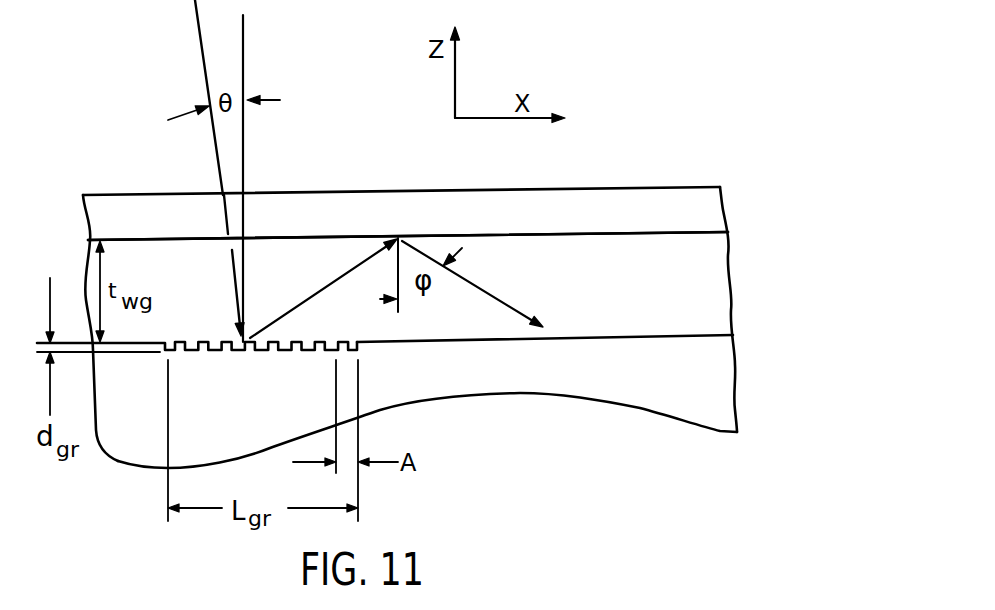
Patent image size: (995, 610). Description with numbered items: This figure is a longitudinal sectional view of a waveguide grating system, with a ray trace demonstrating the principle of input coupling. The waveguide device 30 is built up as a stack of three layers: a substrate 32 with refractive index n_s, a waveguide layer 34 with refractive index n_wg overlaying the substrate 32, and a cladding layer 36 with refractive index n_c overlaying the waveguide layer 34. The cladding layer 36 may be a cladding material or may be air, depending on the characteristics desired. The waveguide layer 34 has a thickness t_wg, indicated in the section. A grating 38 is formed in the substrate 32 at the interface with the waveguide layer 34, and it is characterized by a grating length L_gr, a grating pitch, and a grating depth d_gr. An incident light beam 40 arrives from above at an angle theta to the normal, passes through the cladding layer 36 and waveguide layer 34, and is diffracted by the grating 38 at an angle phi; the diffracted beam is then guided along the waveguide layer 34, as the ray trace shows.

The waveguide device 30 is at (658, 177).
The substrate 32 is at (722, 386).
The waveguide layer 34 is at (712, 292).
The cladding layer 36 is at (710, 207).
The grating 38 is at (207, 341).
The incident light beam 40 is at (199, 38).